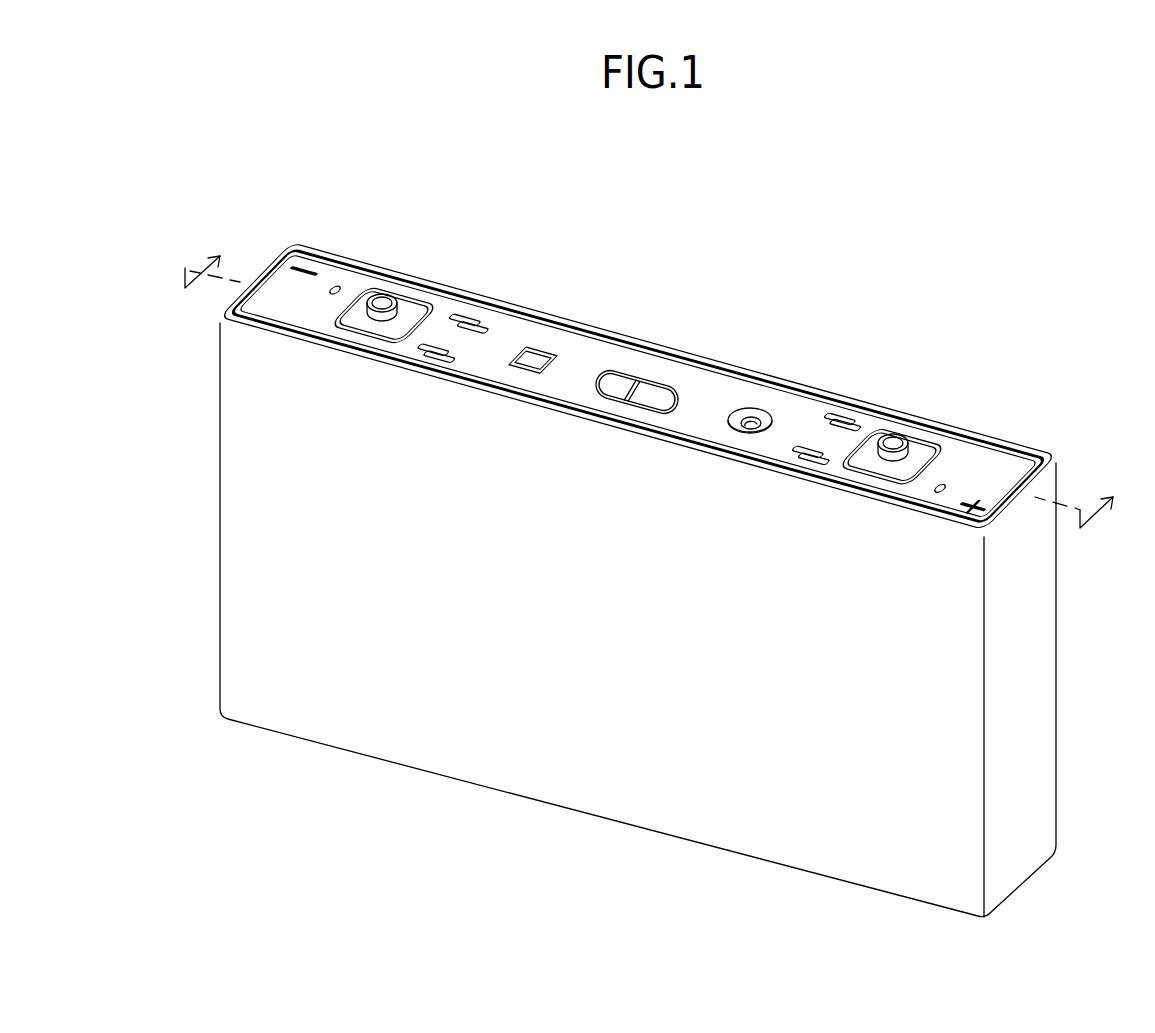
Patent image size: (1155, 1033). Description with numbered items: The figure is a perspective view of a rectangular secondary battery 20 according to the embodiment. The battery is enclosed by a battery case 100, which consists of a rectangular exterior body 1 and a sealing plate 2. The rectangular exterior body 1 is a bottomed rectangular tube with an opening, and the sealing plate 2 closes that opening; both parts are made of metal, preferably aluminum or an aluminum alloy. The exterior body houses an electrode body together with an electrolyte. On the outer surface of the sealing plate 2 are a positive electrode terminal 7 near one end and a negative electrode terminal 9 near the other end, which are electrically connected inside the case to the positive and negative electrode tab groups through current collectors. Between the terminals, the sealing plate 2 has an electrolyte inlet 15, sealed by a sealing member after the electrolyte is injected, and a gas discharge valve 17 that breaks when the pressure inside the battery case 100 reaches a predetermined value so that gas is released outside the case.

The rectangular secondary battery 20 is at (198, 168).
The battery case 100 is at (987, 347).
The rectangular exterior body 1 is at (1052, 485).
The sealing plate 2 is at (978, 460).
The positive electrode terminal 7 is at (920, 450).
The negative electrode terminal 9 is at (408, 303).
The electrolyte inlet 15 is at (755, 405).
The gas discharge valve 17 is at (656, 398).